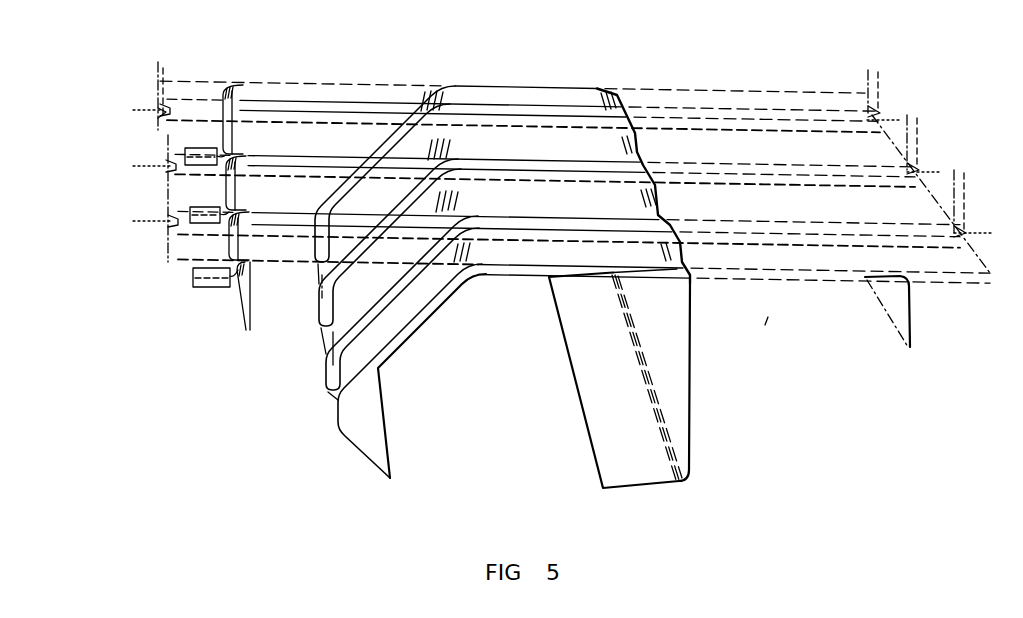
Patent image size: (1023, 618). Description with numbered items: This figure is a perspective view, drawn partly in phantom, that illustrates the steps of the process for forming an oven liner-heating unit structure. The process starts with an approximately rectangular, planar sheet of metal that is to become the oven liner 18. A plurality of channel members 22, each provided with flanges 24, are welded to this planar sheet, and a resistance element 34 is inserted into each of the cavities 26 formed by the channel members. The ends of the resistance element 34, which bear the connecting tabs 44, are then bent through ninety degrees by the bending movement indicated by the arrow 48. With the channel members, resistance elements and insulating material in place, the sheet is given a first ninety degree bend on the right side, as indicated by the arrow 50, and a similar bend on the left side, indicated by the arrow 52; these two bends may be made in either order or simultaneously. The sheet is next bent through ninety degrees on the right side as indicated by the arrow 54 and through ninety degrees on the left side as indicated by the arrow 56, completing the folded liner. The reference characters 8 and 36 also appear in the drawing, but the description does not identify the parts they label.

The corrugated panel 8 is at (192, 93).
The oven liner 18 is at (690, 413).
The channel members 22 is at (257, 110).
The flanges 24 is at (300, 120).
The cavities 26 is at (162, 117).
The resistance element 34 is at (150, 112).
The tab 36 is at (170, 222).
The connecting tabs 44 is at (203, 276).
The arrow 48 is at (150, 82).
The arrow 50 is at (962, 258).
The arrow 52 is at (182, 248).
The arrow 54 is at (737, 257).
The arrow 56 is at (390, 340).